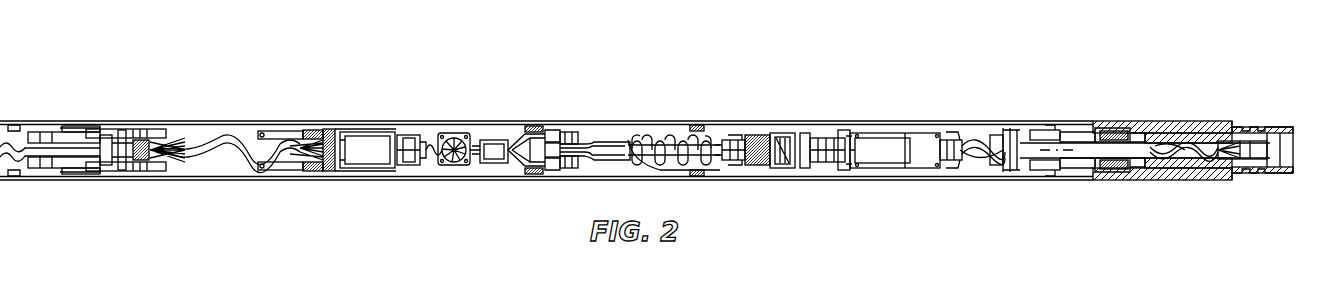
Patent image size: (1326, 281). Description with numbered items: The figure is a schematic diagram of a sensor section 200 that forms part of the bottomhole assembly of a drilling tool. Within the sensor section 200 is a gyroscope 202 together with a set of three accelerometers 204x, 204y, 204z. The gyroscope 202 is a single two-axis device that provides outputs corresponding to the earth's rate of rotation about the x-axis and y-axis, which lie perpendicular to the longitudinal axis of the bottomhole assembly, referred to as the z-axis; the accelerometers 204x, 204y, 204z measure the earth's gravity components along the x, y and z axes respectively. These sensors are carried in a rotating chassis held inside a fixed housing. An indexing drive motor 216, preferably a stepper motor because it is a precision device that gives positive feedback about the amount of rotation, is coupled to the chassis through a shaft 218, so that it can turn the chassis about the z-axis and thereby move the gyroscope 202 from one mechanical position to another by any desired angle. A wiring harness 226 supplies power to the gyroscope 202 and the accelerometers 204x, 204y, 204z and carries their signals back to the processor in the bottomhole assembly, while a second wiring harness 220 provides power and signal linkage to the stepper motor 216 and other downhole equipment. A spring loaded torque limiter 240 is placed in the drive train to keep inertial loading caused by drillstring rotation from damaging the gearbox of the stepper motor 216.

The sensor section 200 is at (958, 105).
The gyroscope 202 is at (370, 140).
The accelerometer 204x is at (497, 160).
The accelerometer 204y is at (453, 138).
The accelerometer 204z is at (413, 160).
The indexing drive motor 216 is at (911, 150).
The shaft 218 is at (606, 148).
The wiring harness 220 is at (676, 144).
The wiring harness 226 is at (215, 135).
The spring loaded torque limiter 240 is at (776, 146).